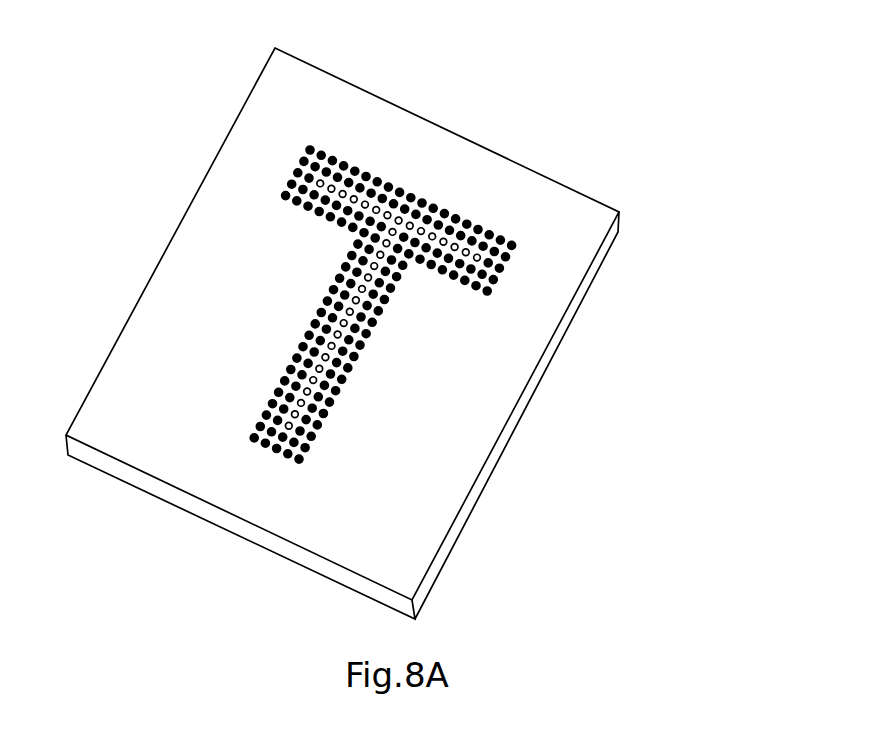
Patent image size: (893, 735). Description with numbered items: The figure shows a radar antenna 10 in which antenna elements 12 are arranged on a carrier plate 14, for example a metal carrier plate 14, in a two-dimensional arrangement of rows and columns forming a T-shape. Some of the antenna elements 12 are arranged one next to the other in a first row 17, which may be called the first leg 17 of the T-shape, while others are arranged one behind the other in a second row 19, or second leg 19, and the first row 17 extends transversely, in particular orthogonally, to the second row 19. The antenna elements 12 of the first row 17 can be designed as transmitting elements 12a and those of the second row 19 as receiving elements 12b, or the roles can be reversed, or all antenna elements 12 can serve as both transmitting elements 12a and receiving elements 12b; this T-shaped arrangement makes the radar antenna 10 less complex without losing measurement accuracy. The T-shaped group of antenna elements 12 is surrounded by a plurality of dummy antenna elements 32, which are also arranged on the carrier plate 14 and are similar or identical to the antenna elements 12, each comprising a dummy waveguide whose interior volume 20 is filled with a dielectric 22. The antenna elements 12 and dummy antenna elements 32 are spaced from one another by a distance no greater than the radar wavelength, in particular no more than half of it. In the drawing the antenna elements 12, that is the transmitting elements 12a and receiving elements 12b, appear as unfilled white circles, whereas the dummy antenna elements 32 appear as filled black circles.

The radar antenna 10 is at (399, 331).
The carrier plate 14 is at (433, 132).
The antenna elements 12 is at (410, 356).
The transmitting elements 12a is at (467, 227).
The receiving elements 12b is at (309, 366).
The first row 17 is at (518, 279).
The dummy antenna elements 32 is at (516, 246).
The second row 19 is at (268, 469).
The interior volume 20 is at (312, 438).
The dielectric 22 is at (312, 438).